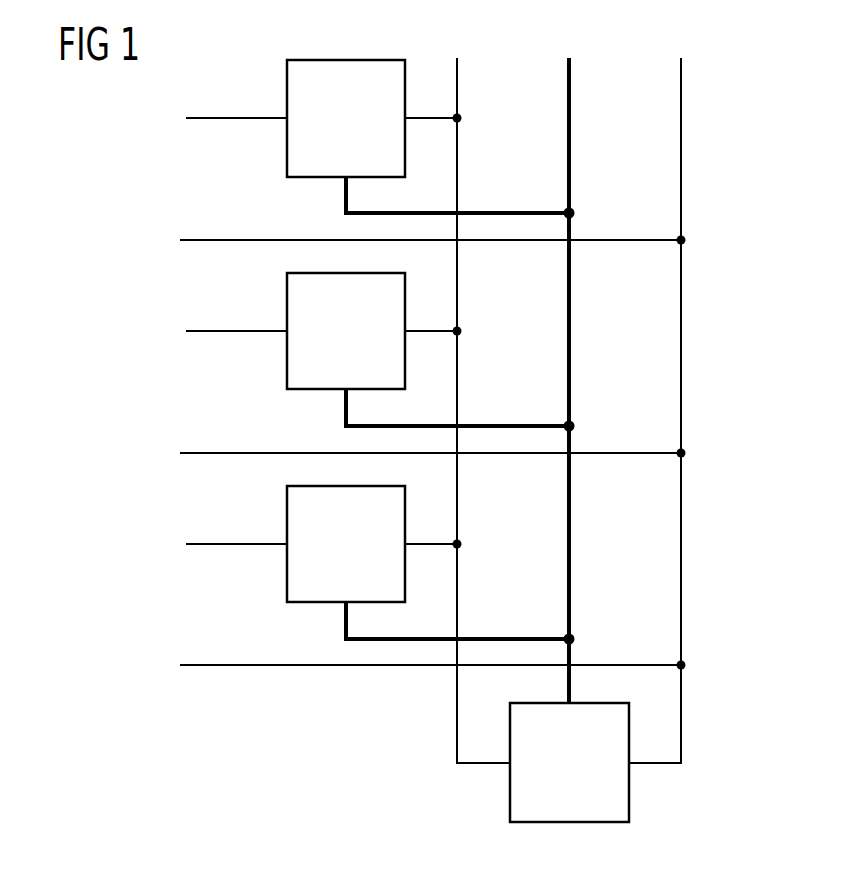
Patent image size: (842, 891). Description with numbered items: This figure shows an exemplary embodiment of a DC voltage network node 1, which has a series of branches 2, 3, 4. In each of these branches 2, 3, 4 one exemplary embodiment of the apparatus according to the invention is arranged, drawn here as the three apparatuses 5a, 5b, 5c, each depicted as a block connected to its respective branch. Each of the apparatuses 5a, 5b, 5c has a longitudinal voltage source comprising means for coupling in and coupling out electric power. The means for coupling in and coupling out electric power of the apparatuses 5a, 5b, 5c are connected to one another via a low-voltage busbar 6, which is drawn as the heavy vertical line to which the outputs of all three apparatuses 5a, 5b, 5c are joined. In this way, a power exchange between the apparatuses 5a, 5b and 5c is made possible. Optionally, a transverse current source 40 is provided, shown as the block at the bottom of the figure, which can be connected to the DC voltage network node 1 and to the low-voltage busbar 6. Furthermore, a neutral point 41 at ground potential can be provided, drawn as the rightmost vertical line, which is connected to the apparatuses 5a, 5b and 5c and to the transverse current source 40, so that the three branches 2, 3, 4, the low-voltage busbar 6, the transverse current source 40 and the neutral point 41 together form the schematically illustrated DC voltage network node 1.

The DC voltage network node 1 is at (457, 331).
The branch 2 is at (247, 120).
The branch 3 is at (247, 333).
The branch 4 is at (247, 546).
The apparatus 5a is at (287, 72).
The apparatus 5b is at (287, 302).
The apparatus 5c is at (287, 514).
The low-voltage busbar 6 is at (569, 331).
The transverse current source 40 is at (629, 792).
The neutral point 41 is at (681, 331).